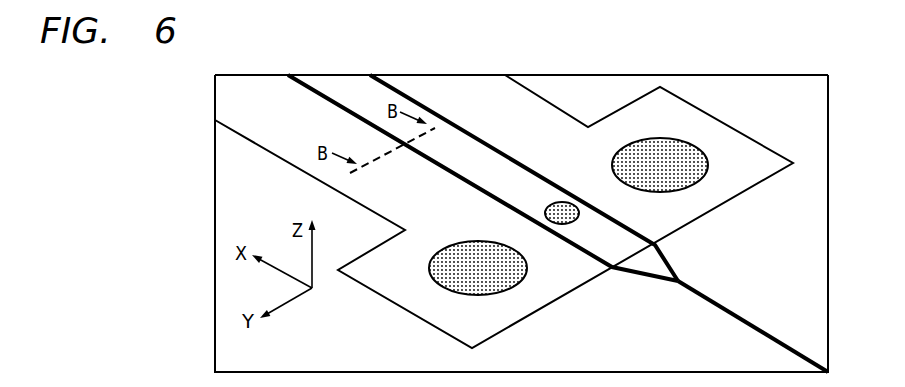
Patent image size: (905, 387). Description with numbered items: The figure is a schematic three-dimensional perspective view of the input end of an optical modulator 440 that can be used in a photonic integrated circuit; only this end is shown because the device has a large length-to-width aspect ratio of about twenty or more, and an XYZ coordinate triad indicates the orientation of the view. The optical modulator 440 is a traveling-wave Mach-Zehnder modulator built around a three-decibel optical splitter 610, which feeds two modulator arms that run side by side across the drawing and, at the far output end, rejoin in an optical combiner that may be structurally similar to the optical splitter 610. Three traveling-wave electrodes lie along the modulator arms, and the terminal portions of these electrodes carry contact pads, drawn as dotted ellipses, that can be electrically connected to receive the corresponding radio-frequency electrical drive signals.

The optical modulator 440 is at (769, 62).
The 3-dB optical splitter 610 is at (558, 223).